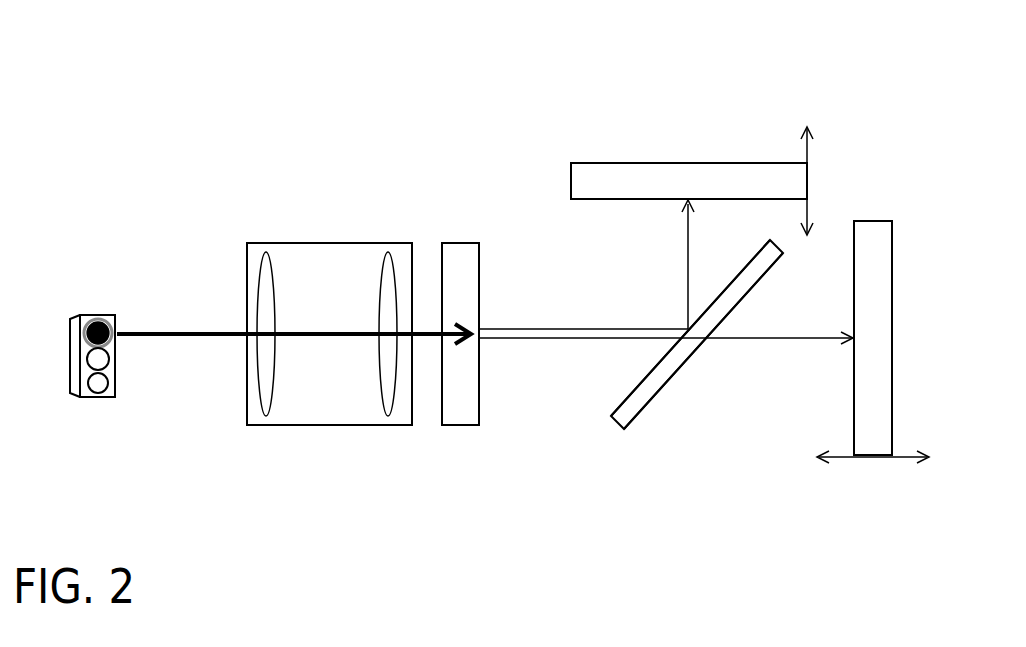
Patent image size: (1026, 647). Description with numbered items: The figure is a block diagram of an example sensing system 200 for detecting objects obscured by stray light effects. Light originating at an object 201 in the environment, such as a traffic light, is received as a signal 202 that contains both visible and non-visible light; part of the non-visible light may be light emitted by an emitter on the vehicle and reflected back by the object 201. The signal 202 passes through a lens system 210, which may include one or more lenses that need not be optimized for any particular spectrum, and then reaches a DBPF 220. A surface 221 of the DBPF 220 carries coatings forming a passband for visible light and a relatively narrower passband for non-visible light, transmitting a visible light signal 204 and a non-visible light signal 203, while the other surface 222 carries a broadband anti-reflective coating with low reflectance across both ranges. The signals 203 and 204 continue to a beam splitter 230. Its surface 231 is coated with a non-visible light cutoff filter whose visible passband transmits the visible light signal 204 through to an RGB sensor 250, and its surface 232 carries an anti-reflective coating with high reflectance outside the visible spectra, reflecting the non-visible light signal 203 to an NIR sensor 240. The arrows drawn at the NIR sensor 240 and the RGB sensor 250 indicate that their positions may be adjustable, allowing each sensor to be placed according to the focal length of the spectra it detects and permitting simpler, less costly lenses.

The sensing system 200 is at (93, 38).
The object 201 is at (100, 397).
The signal 202 is at (203, 332).
The non-visible light signal 203 is at (597, 329).
The visible light signal 204 is at (570, 340).
The lens system 210 is at (350, 397).
The DBPF 220 is at (453, 243).
The surface 221 is at (442, 405).
The surface 222 is at (479, 262).
The beam splitter 230 is at (612, 415).
The surface 231 is at (623, 403).
The surface 232 is at (647, 400).
The NIR sensor 240 is at (720, 163).
The RGB sensor 250 is at (854, 389).